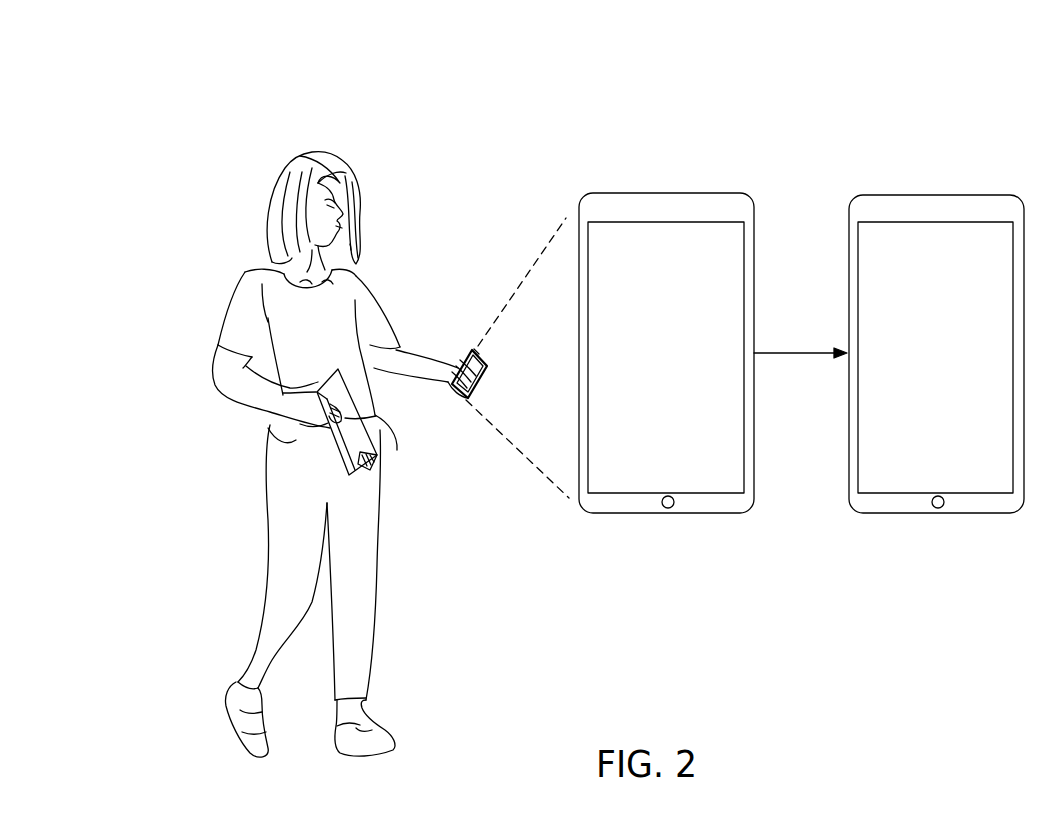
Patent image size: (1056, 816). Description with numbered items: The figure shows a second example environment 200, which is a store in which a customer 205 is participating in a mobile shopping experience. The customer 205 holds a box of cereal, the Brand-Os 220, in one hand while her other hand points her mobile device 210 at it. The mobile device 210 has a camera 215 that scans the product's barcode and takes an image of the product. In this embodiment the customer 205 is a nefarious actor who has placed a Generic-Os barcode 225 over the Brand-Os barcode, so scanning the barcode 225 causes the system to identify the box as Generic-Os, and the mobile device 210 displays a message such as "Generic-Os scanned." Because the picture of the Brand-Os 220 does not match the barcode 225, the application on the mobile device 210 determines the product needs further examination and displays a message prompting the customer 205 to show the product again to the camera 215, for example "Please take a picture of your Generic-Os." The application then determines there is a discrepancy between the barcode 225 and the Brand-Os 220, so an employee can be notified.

The second example environment 200 is at (262, 63).
The customer 205 is at (247, 262).
The mobile device 210 is at (488, 370).
The camera 215 is at (470, 349).
The Brand-Os 220 is at (360, 410).
The Generic-Os barcode 225 is at (368, 468).